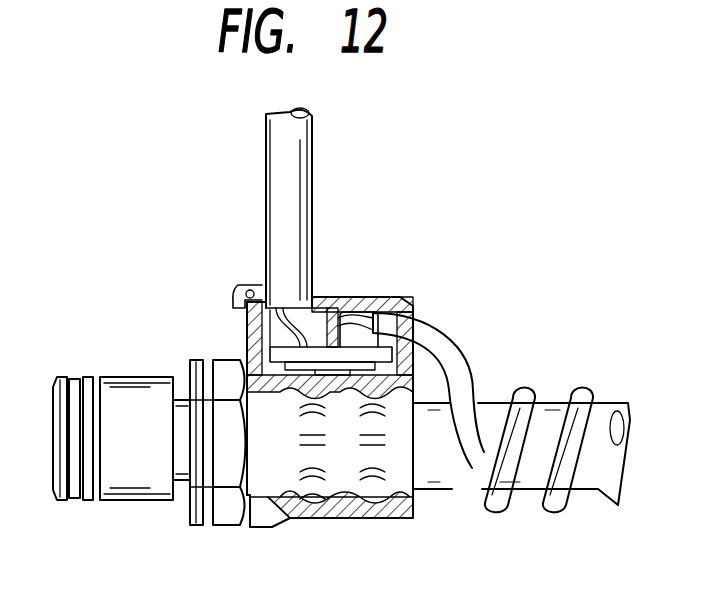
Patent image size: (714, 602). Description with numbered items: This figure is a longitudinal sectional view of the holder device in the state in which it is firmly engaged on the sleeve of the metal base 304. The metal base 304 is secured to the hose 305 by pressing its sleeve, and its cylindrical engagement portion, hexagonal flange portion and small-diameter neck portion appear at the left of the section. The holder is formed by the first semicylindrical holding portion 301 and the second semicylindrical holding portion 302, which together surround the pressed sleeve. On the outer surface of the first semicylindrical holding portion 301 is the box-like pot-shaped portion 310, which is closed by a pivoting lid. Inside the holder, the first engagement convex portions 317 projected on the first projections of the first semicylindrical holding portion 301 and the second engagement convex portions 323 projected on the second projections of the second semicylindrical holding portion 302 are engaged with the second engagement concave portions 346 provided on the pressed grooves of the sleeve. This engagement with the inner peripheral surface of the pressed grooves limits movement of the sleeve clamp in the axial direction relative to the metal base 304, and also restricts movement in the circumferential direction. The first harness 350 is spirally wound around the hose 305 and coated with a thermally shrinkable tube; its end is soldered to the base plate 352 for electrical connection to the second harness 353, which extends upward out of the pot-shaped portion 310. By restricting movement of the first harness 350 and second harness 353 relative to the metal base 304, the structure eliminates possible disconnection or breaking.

The first semicylindrical holding portion 301 is at (393, 296).
The second semicylindrical holding portion 302 is at (335, 520).
The metal base 304 is at (128, 395).
The hose 305 is at (458, 482).
The pot-shaped portion 310 is at (355, 296).
The first engagement convex portions 317 is at (392, 331).
The second engagement convex portions 323 is at (365, 520).
The second engagement concave portions 346 is at (310, 490).
The first harness 350 is at (466, 336).
The base plate 352 is at (432, 348).
The second harness 353 is at (276, 204).